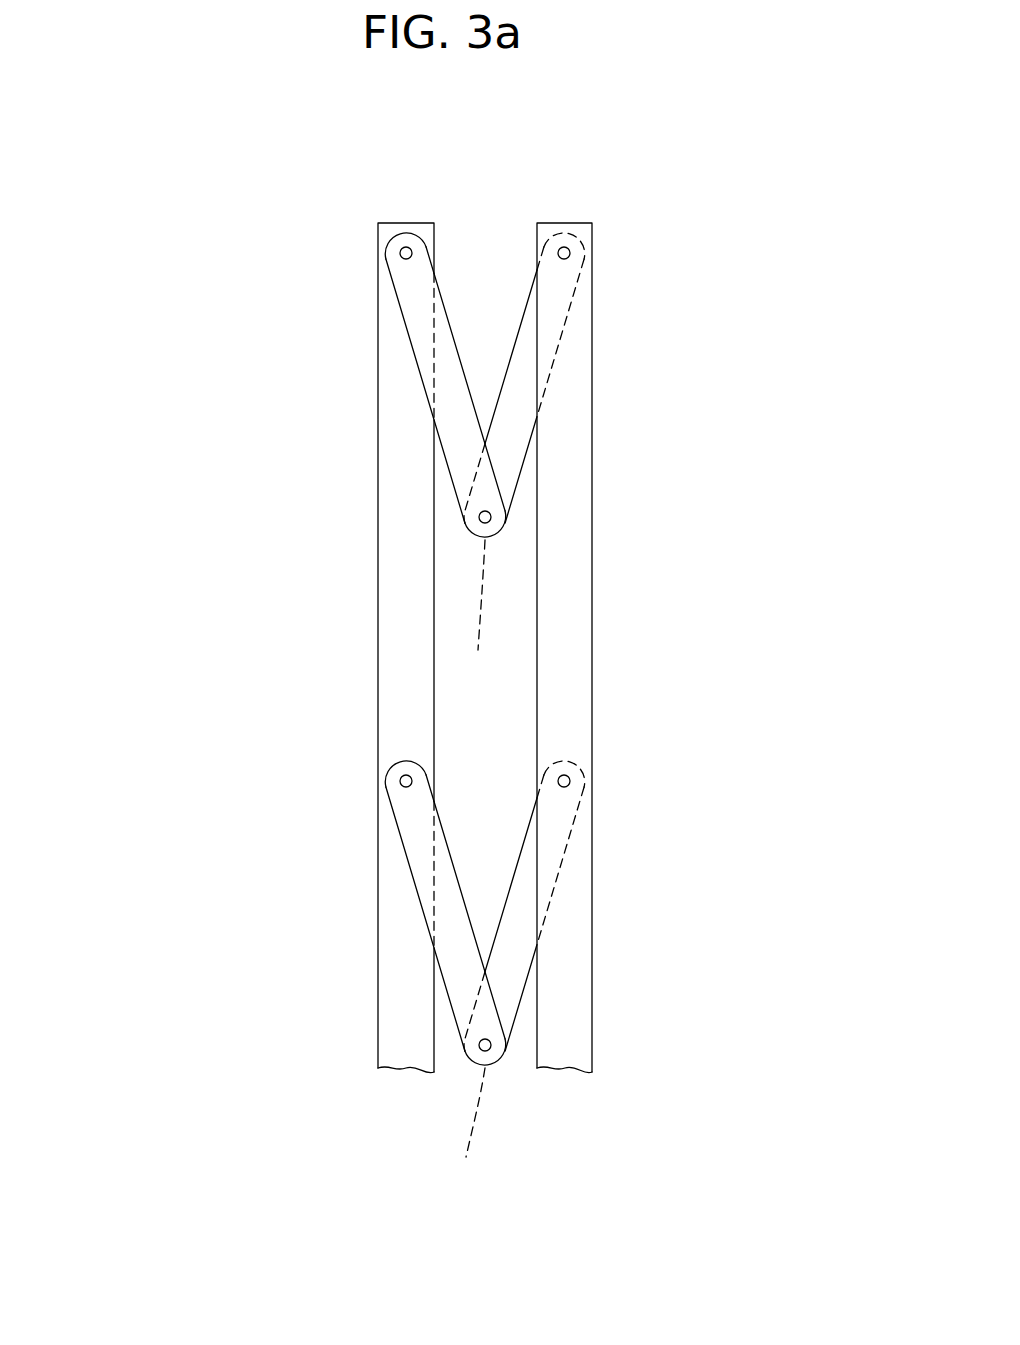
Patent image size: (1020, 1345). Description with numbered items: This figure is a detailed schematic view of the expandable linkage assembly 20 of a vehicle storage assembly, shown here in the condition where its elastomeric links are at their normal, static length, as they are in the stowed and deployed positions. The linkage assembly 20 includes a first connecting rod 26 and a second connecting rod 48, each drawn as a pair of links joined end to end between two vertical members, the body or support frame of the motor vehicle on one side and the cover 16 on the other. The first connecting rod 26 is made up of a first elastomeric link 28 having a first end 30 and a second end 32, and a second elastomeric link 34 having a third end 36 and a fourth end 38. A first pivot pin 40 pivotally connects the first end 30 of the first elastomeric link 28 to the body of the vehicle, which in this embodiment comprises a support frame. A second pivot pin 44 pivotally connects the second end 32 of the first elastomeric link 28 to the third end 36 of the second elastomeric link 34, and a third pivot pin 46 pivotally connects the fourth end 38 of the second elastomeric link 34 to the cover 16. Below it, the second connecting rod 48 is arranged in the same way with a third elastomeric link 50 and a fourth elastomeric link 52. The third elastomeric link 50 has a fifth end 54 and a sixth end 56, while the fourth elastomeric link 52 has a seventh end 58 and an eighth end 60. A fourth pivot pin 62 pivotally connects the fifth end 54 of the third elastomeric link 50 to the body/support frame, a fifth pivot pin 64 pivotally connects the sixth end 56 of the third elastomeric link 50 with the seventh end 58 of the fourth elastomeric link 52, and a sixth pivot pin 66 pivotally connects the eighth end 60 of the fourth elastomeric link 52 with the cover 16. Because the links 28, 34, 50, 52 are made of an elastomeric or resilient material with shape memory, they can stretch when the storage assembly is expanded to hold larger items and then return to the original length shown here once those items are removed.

The cover 16 is at (562, 663).
The expandable linkage assembly 20 is at (267, 522).
The first connecting rod 26 is at (516, 201).
The first elastomeric link 28 is at (445, 334).
The first end 30 is at (404, 231).
The second end 32 is at (497, 538).
The second elastomeric link 34 is at (515, 432).
The third end 36 is at (477, 611).
The fourth end 38 is at (587, 245).
The first pivot pin 40 is at (400, 257).
The second pivot pin 44 is at (479, 521).
The third pivot pin 46 is at (570, 257).
The second connecting rod 48 is at (489, 963).
The third elastomeric link 50 is at (422, 945).
The fourth elastomeric link 52 is at (594, 898).
The fifth end 54 is at (340, 763).
The sixth end 56 is at (528, 1095).
The seventh end 58 is at (466, 1128).
The eighth end 60 is at (634, 766).
The fourth pivot pin 62 is at (346, 820).
The fifth pivot pin 64 is at (397, 1030).
The sixth pivot pin 66 is at (633, 810).